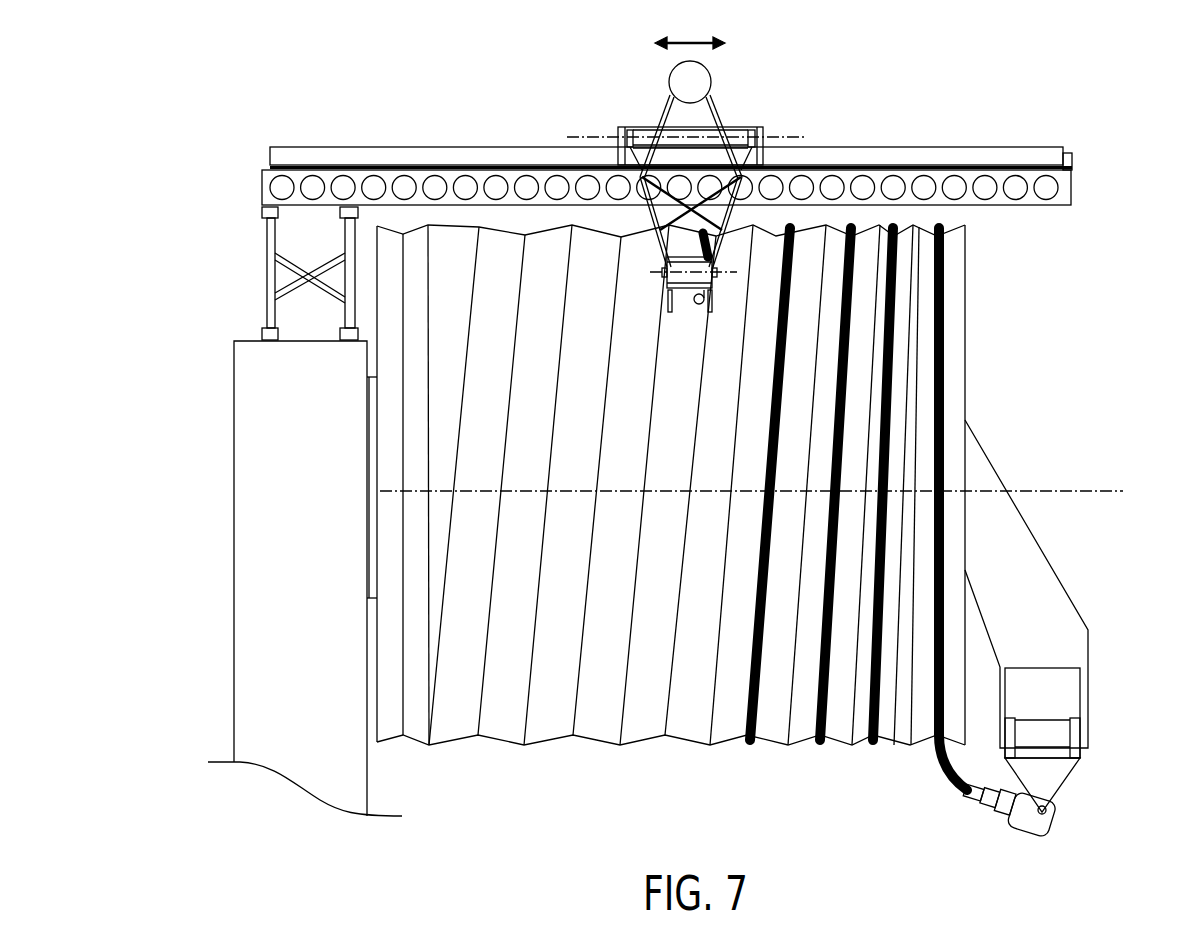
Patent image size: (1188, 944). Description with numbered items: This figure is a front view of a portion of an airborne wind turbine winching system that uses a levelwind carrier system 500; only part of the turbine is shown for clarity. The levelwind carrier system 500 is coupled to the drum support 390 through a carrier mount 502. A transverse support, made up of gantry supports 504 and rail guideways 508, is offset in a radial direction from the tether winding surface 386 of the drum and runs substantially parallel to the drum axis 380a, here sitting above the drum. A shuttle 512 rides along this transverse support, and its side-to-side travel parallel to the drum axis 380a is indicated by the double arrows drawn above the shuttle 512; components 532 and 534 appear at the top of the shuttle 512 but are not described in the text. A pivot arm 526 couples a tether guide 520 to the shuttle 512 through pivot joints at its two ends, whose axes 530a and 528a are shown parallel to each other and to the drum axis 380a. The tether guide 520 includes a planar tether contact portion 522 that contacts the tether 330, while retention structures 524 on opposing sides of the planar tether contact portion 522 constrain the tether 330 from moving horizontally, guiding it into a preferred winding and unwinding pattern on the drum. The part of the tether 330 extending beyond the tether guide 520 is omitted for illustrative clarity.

The tether 330 is at (698, 304).
The drum axis 380a is at (773, 494).
The tether winding surface 386 is at (952, 295).
The drum support 390 is at (313, 538).
The levelwind carrier system 500 is at (625, 210).
The carrier mount 502 is at (252, 265).
The gantry supports 504 is at (268, 173).
The rail guideways 508 is at (277, 155).
The shuttle 512 is at (738, 104).
The tether guide 520 is at (677, 326).
The planar tether contact portion 522 is at (708, 293).
The retention structures 524 is at (668, 300).
The pivot arm 526 is at (633, 223).
The distal pivot joint axis 528a is at (670, 274).
The proximate pivot joint axis 530a is at (705, 137).
The belt 532 is at (640, 103).
The pulley 534 is at (688, 72).